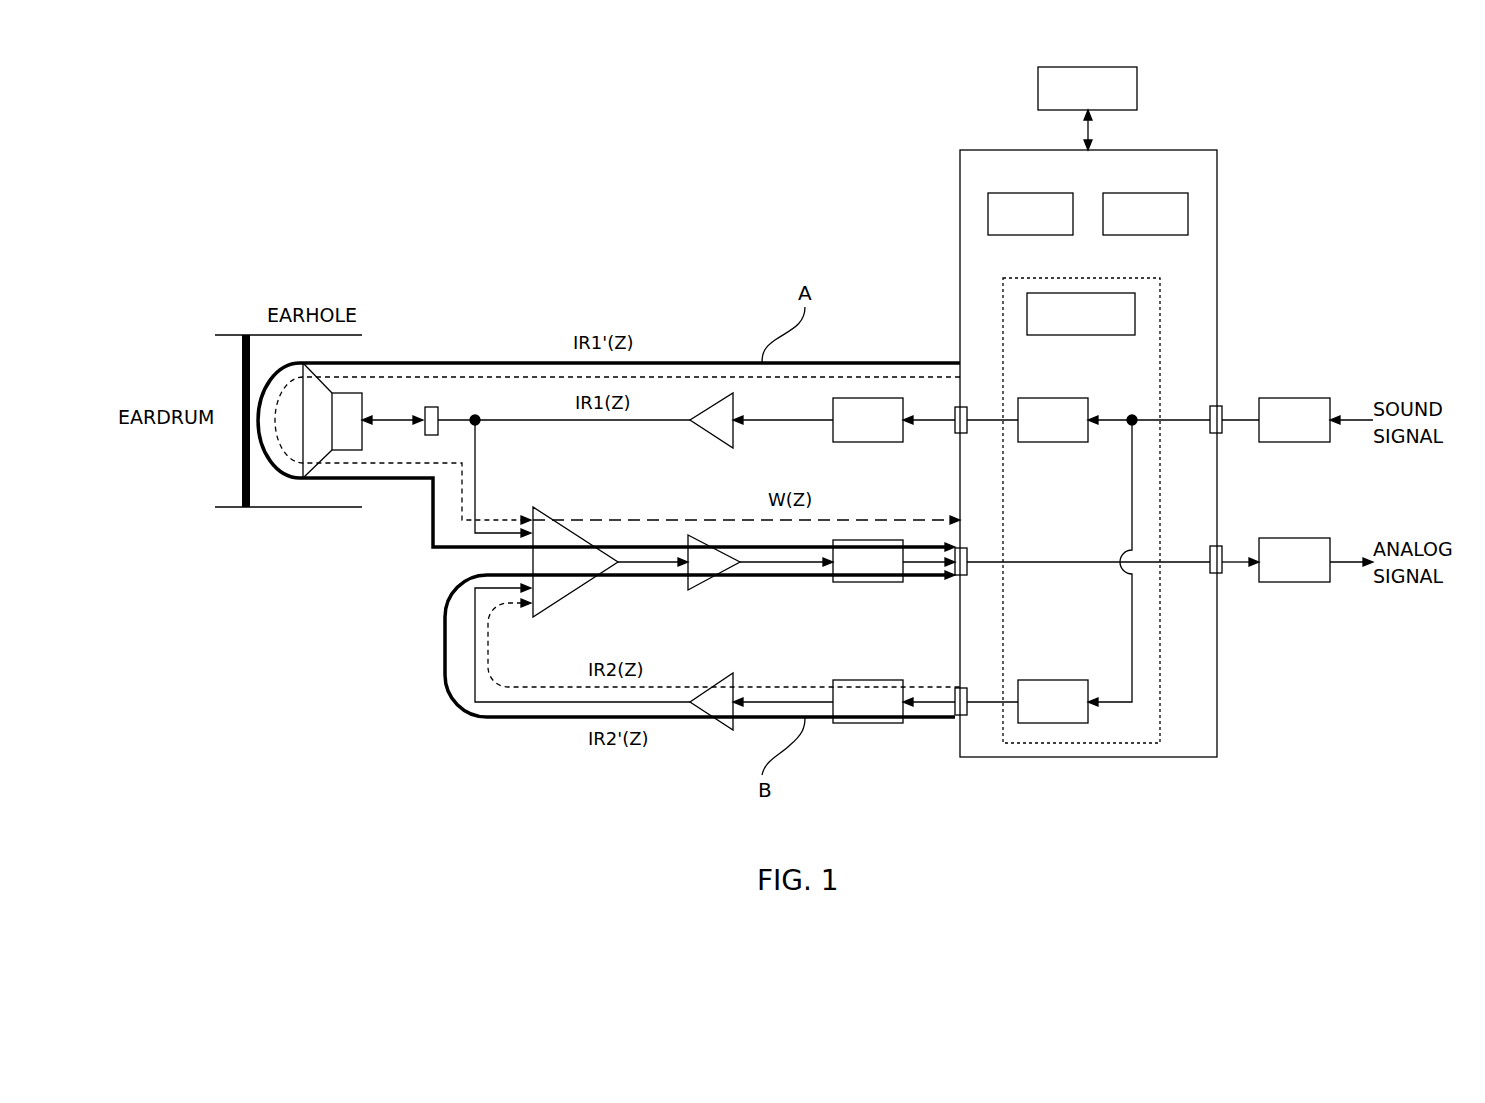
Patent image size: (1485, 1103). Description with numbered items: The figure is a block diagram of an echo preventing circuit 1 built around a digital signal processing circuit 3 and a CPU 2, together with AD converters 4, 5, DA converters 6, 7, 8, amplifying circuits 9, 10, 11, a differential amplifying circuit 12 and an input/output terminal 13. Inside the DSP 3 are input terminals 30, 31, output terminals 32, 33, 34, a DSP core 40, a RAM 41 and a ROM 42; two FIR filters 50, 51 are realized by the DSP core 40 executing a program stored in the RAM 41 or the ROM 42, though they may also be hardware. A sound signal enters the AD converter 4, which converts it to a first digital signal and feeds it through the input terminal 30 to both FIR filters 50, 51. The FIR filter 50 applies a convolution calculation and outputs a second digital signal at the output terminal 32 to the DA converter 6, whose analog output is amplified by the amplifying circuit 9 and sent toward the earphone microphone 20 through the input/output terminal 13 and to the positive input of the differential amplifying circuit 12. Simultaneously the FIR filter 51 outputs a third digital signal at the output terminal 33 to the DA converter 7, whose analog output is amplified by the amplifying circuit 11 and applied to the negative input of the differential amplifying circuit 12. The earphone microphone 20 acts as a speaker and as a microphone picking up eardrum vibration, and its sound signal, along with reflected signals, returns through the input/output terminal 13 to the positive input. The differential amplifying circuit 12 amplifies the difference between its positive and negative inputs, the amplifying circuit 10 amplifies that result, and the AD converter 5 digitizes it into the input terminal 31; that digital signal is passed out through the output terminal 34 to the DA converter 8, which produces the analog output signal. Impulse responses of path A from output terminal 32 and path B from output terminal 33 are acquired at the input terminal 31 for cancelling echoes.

The echo preventing circuit 1 is at (688, 116).
The CPU 2 is at (1137, 96).
The digital signal processing circuit 3 is at (1190, 150).
The AD converter 4 is at (1290, 398).
The AD converter 5 is at (860, 583).
The DA converter 6 is at (868, 442).
The DA converter 7 is at (875, 680).
The DA converter 8 is at (1290, 538).
The amplifying circuit 9 is at (712, 448).
The amplifying circuit 10 is at (710, 585).
The amplifying circuit 11 is at (728, 680).
The differential amplifying circuit 12 is at (565, 592).
The input/output terminal 13 is at (440, 410).
The earphone microphone 20 is at (362, 407).
The input terminal 30 is at (1207, 435).
The input terminal 31 is at (965, 577).
The output terminal 32 is at (965, 435).
The output terminal 33 is at (970, 686).
The output terminal 34 is at (1207, 575).
The DSP core 40 is at (1105, 336).
The RAM 41 is at (1000, 236).
The ROM 42 is at (1160, 236).
The FIR filter 50 is at (1050, 398).
The FIR filter 51 is at (1048, 680).